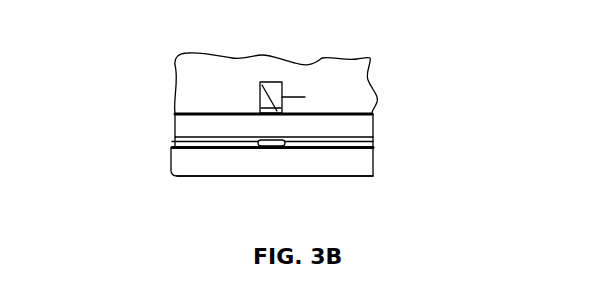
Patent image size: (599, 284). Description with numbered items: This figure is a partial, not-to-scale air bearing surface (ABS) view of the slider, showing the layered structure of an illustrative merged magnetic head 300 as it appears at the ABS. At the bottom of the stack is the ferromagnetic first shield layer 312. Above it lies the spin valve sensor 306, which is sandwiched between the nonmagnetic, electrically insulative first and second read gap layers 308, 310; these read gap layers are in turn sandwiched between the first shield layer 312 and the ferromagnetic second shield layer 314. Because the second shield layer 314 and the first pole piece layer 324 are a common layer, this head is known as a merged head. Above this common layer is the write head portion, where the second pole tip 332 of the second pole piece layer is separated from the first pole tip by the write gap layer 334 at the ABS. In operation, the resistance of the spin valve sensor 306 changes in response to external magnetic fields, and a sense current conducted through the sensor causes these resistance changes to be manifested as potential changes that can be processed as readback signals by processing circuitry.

The merged magnetic head 300 is at (392, 64).
The second pole tip 332 is at (273, 93).
The write gap layer 334 is at (260, 100).
The second shield layer 314 is at (229, 130).
The first pole piece layer 324 is at (176, 131).
The second read gap layer 310 is at (348, 145).
The spin valve sensor 306 is at (272, 150).
The first read gap layer 308 is at (213, 152).
The first shield layer 312 is at (362, 164).